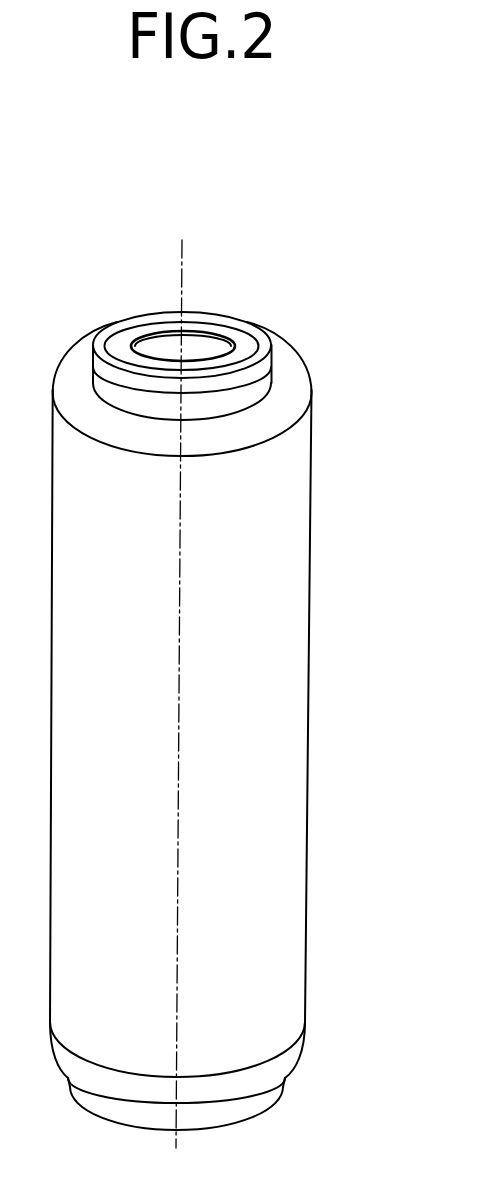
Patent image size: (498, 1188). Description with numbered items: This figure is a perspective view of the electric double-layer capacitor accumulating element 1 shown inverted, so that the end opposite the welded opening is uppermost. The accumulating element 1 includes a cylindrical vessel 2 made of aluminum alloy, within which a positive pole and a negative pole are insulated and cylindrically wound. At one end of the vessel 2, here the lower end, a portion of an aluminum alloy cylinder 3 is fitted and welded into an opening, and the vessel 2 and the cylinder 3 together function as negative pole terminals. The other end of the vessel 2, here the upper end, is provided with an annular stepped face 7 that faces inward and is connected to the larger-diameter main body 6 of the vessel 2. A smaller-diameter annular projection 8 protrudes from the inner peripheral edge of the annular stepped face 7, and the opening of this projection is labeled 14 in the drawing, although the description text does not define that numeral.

The electric double-layer capacitor accumulating element 1 is at (327, 673).
The cylindrical vessel 2 is at (310, 765).
The cylinder 3 is at (293, 1053).
The main body 6 is at (293, 542).
The annular stepped face 7 is at (288, 372).
The annular projection 8 is at (100, 355).
The outlet opening 14 is at (125, 333).